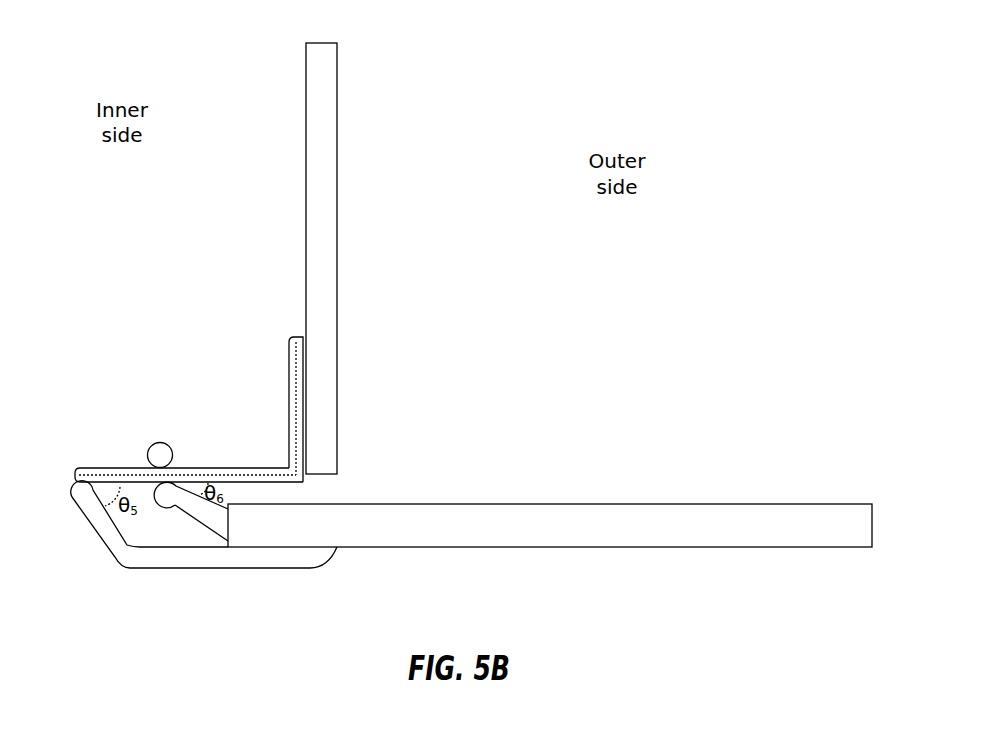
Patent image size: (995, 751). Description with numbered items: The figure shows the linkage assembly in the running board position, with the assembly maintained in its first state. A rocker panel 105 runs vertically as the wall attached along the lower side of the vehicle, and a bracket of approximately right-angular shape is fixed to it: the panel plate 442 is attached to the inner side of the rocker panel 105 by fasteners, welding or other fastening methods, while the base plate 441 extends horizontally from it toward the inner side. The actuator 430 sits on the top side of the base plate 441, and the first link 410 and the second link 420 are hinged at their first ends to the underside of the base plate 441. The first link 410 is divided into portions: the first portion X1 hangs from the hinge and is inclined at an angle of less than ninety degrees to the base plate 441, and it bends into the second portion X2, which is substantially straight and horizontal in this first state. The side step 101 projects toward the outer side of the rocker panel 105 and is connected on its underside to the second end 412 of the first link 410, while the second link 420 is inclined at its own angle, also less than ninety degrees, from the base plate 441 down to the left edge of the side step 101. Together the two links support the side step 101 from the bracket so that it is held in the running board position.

The side step 101 is at (584, 520).
The rocker panel 105 is at (306, 132).
The first link 410 is at (113, 555).
The second end of the first link 412 is at (337, 549).
The second link 420 is at (200, 525).
The actuator 430 is at (163, 443).
The base plate 441 is at (213, 466).
The panel plate 442 is at (292, 350).
The first portion X1 is at (95, 531).
The second portion X2 is at (172, 568).